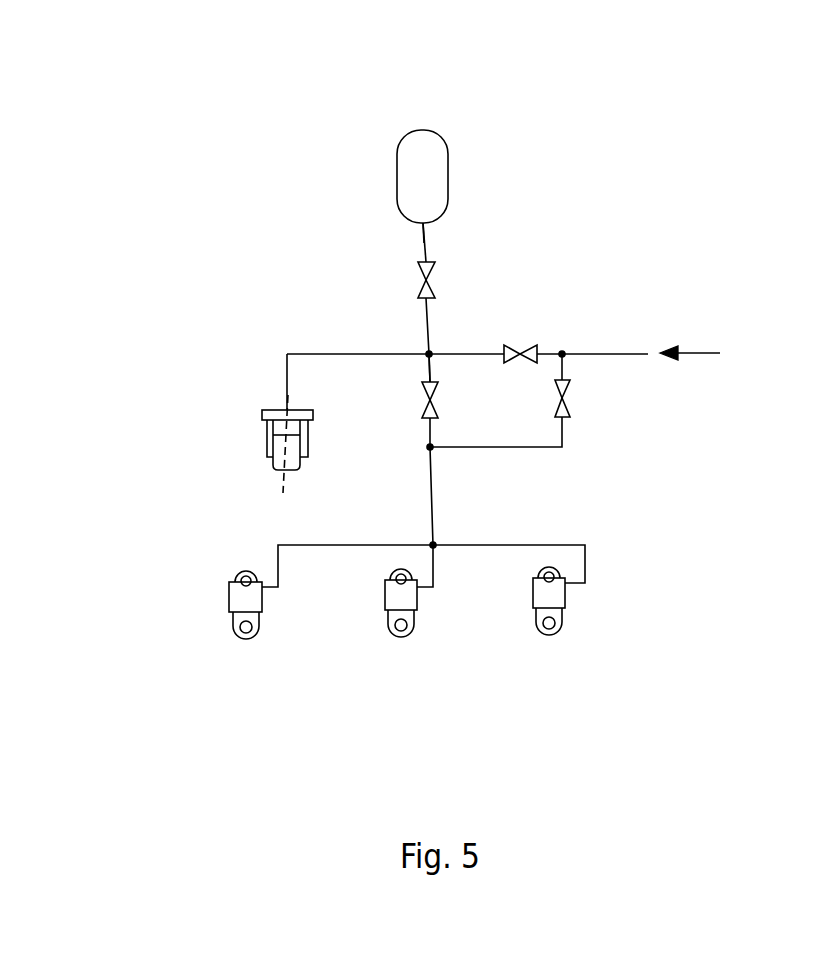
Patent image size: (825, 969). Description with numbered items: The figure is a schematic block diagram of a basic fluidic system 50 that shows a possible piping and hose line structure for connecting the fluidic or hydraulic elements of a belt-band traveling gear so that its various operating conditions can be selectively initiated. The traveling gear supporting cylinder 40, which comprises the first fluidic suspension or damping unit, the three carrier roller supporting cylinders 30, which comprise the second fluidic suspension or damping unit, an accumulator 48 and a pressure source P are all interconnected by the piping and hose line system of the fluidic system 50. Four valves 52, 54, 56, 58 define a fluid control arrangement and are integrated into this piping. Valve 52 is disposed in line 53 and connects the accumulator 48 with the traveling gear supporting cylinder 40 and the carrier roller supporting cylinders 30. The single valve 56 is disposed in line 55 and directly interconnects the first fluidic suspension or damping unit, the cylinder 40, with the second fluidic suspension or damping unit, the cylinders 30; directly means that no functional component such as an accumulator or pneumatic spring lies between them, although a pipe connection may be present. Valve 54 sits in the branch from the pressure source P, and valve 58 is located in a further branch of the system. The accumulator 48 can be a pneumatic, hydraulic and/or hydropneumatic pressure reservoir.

The carrier roller supporting cylinders 30 is at (233, 600).
The traveling gear supporting cylinder 40 is at (273, 410).
The accumulator 48 is at (432, 178).
The fluidic system 50 is at (375, 313).
The valve 52 is at (428, 283).
The line 53 is at (423, 242).
The valve 54 is at (510, 349).
The line 55 is at (431, 369).
The valve 56 is at (425, 390).
The valve 58 is at (570, 391).
The pressure source P is at (690, 335).